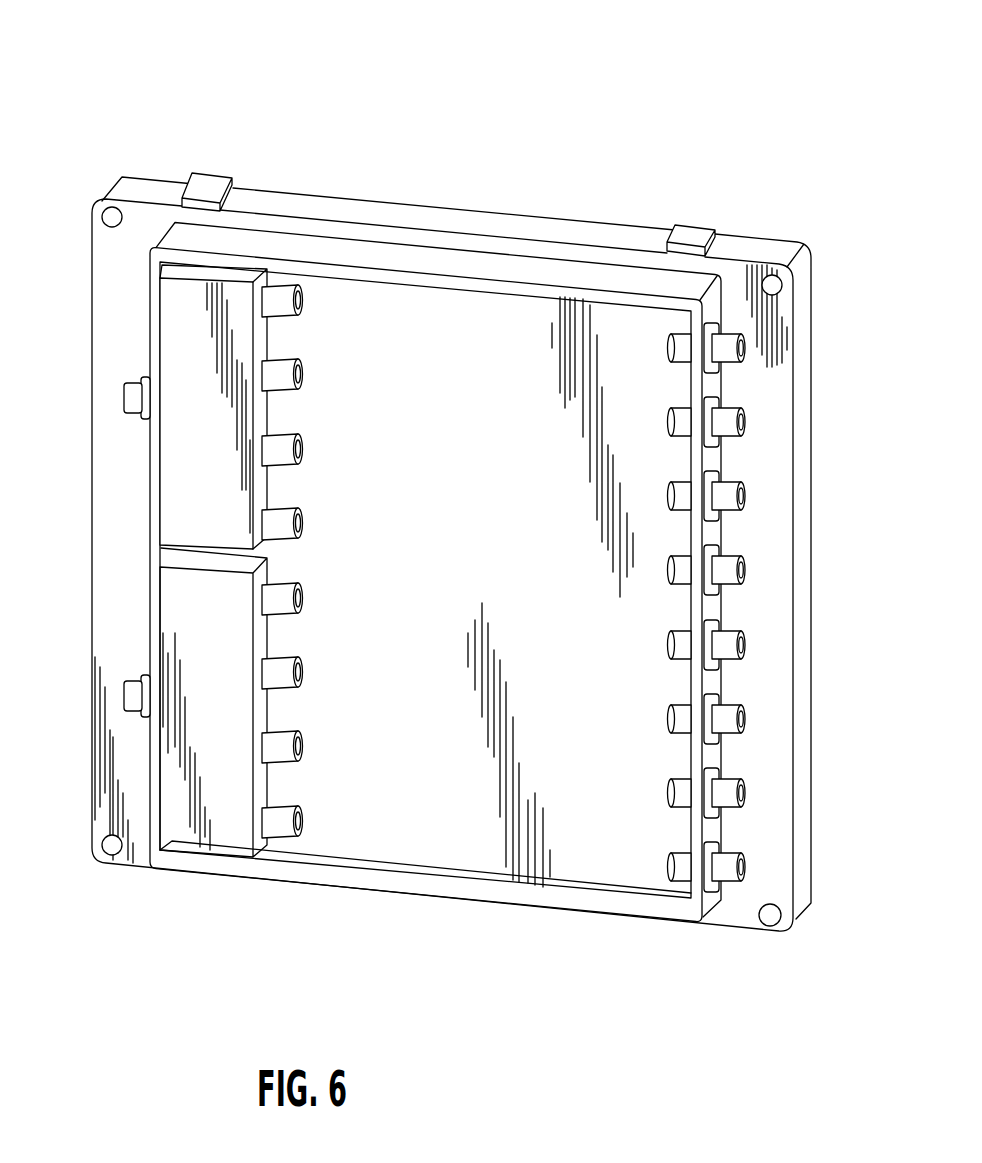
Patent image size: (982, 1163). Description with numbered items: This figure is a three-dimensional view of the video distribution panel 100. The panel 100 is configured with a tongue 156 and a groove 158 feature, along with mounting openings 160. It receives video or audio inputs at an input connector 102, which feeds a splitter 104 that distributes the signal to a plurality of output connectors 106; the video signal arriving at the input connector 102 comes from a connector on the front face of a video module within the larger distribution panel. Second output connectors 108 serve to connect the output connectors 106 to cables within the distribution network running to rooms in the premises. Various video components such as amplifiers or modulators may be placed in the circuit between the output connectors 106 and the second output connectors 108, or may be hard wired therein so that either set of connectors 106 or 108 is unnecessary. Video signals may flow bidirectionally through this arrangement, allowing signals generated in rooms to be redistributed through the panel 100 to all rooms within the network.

The video distribution panel 100 is at (438, 142).
The input connector 102 is at (128, 680).
The splitter 104 is at (210, 307).
The output connectors 106 is at (303, 308).
The second output connectors 108 is at (742, 350).
The tongue 156 is at (692, 224).
The groove 158 is at (707, 922).
The mounting openings 160 is at (770, 917).